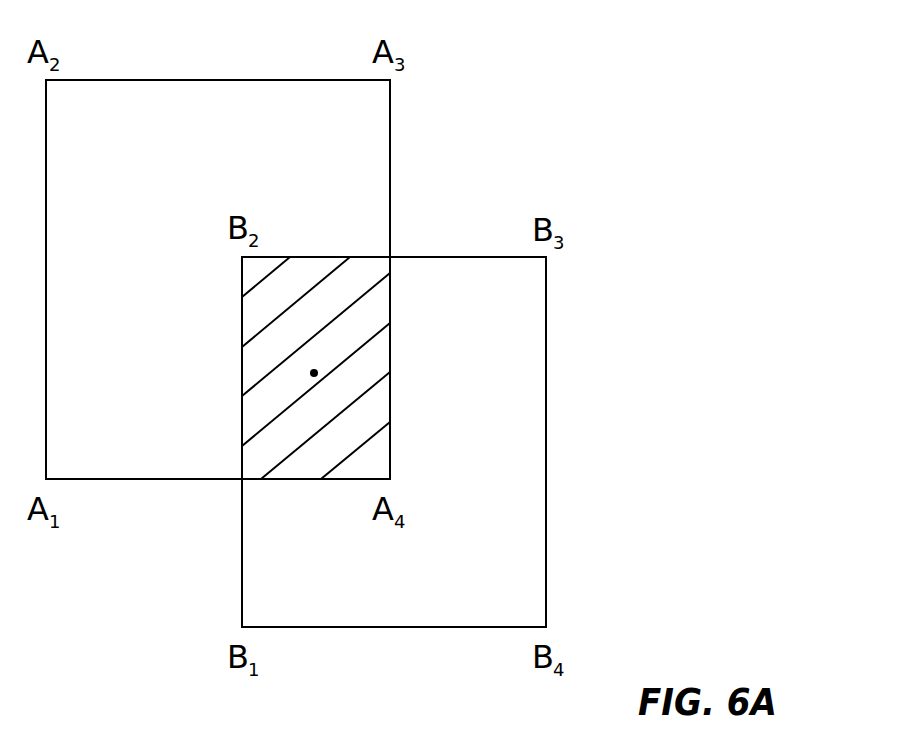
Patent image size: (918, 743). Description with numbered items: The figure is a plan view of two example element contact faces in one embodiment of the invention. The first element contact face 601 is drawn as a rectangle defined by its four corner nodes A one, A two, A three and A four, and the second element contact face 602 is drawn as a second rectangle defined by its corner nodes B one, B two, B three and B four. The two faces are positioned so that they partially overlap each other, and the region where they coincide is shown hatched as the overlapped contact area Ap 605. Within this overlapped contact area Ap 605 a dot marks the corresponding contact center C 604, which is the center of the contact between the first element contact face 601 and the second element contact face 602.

The first element contact face 601 is at (110, 117).
The second element contact face 602 is at (517, 612).
The contact center C 604 is at (320, 370).
The overlapped contact area Ap 605 is at (253, 309).